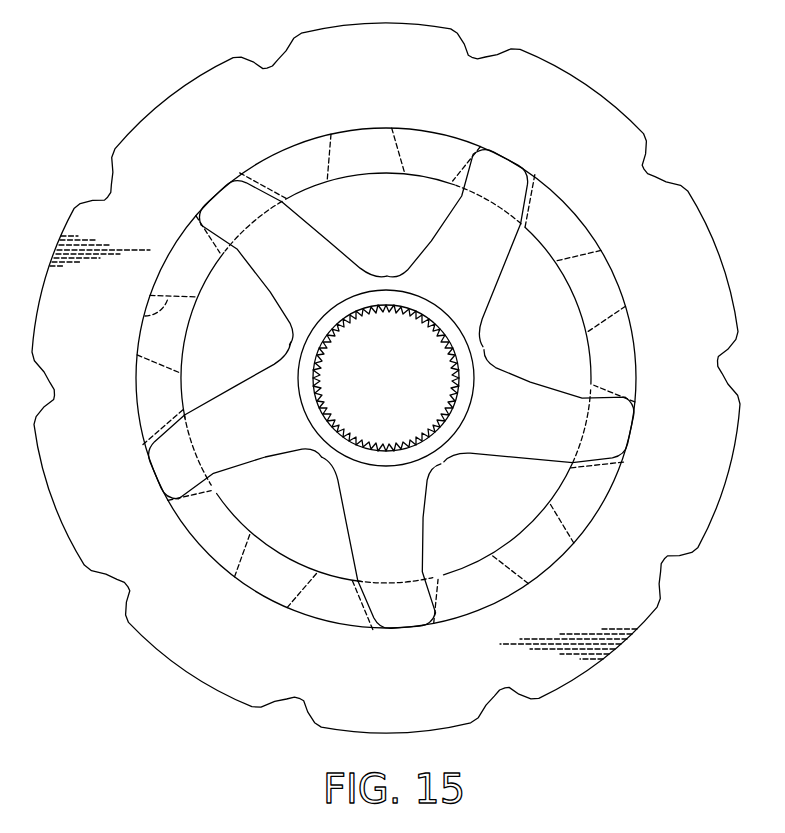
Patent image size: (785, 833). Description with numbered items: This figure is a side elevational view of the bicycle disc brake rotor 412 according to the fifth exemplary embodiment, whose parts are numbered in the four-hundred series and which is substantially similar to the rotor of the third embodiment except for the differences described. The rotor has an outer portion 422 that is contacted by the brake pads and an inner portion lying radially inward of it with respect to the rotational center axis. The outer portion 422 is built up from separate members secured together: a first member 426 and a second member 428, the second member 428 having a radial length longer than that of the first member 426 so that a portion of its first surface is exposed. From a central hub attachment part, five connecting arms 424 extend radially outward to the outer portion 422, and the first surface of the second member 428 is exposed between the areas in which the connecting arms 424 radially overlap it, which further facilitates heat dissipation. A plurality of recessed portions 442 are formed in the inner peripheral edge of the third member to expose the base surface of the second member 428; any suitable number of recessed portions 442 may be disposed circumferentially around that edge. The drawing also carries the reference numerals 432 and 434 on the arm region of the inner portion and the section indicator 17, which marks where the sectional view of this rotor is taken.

The bicycle disc brake rotor 412 is at (386, 378).
The outer portion 422 is at (126, 131).
The first member 426 is at (120, 524).
The second member 428 is at (160, 396).
The recessed portion 442 is at (144, 315).
The connecting arm 424 is at (384, 384).
The first arm 432 is at (488, 351).
The second arm 434 is at (420, 508).
The section line 17 is at (570, 62).